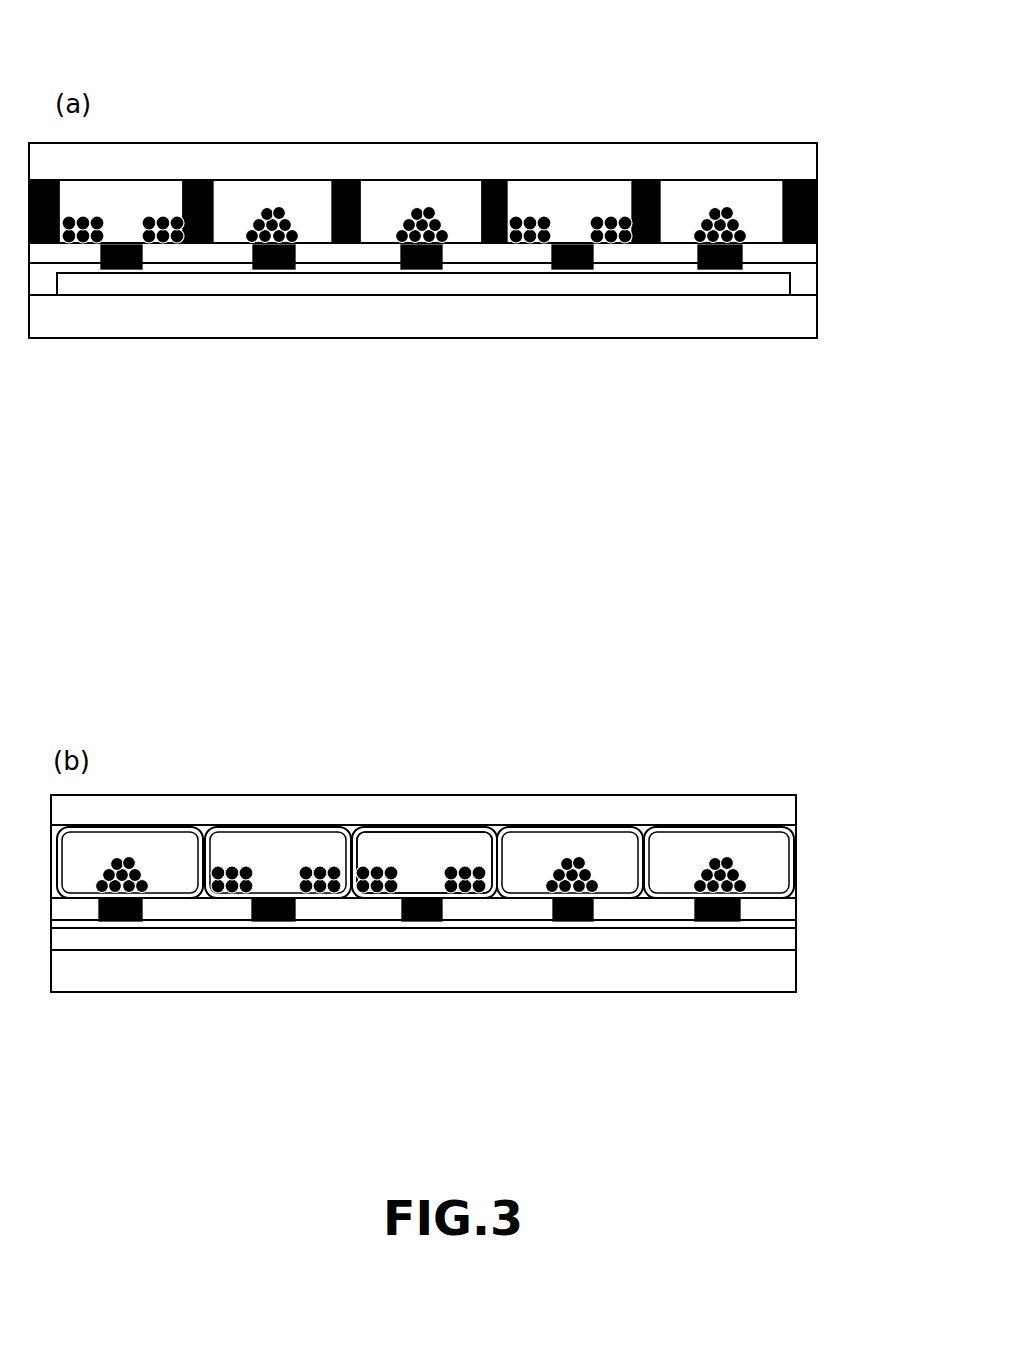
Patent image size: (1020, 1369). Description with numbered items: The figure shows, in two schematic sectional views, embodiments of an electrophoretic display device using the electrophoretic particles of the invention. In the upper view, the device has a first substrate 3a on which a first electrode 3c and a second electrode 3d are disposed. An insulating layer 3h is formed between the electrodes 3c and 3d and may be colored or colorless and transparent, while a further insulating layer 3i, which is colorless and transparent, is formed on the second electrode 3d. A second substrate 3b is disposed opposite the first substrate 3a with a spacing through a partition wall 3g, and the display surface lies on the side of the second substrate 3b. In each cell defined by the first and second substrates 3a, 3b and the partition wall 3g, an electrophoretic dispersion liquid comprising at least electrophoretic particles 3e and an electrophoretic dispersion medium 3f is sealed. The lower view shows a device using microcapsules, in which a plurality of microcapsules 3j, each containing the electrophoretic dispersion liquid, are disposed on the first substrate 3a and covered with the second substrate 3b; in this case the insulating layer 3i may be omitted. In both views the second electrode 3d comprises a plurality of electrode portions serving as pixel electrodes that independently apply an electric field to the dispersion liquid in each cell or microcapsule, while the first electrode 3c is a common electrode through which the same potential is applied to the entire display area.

The first substrate 3a is at (320, 320).
The second substrate 3b is at (258, 165).
The first electrode 3c is at (577, 290).
The second electrode 3d is at (120, 269).
The electrophoretic particles 3e is at (728, 210).
The electrophoretic dispersion medium 3f is at (460, 217).
The partition wall 3g is at (818, 198).
The insulating layer 3h is at (805, 287).
The insulating layer 3i is at (805, 257).
The microcapsule 3j is at (790, 850).